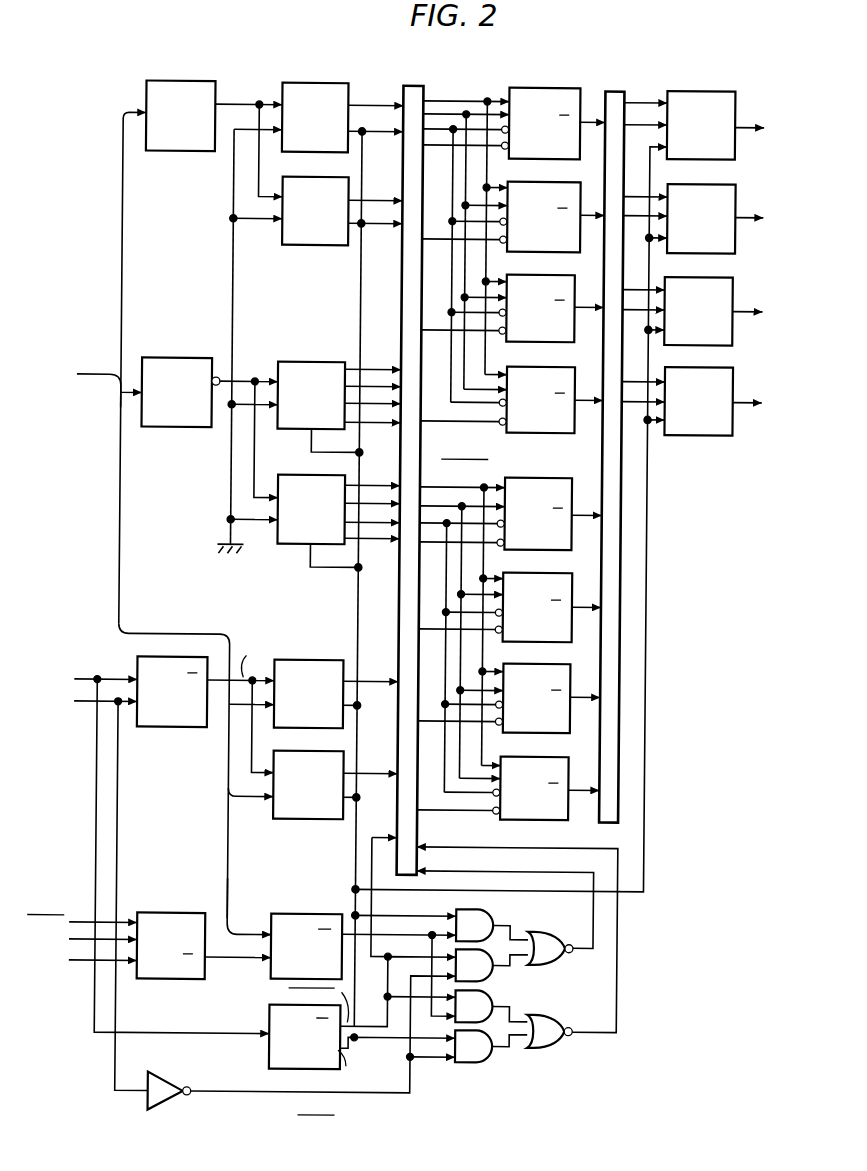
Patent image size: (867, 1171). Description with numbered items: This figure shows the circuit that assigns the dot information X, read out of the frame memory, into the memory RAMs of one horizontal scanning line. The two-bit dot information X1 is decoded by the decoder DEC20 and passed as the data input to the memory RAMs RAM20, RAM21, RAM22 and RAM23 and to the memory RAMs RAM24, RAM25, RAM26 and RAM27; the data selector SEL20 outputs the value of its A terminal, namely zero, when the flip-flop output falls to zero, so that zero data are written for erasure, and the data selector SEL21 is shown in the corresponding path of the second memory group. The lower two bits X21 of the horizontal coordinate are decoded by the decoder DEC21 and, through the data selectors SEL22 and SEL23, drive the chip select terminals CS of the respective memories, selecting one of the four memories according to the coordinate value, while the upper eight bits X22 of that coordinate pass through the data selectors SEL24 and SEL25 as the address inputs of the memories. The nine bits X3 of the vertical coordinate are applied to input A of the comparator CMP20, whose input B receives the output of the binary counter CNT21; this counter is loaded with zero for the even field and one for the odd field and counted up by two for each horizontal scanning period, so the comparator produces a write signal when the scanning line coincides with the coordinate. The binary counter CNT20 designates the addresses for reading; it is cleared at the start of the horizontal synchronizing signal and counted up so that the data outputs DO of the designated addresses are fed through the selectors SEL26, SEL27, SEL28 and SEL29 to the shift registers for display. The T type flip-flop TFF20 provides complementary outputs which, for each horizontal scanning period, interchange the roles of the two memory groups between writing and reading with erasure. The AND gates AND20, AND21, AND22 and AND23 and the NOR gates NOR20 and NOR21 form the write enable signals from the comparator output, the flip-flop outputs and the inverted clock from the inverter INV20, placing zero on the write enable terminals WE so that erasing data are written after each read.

The decoder DEC20 is at (172, 153).
The decoder DEC21 is at (171, 430).
The data selector SEL20 is at (283, 153).
The data selector SEL21 is at (303, 247).
The data selector SEL22 is at (305, 363).
The data selector SEL23 is at (290, 547).
The data selector SEL24 is at (299, 661).
The data selector SEL25 is at (312, 821).
The data selector SEL26 is at (733, 106).
The data selector SEL27 is at (733, 200).
The data selector SEL28 is at (731, 294).
The data selector SEL29 is at (731, 385).
The random access memory RAM20 is at (572, 157).
The random access memory RAM21 is at (566, 251).
The random access memory RAM22 is at (566, 342).
The random access memory RAM23 is at (542, 433).
The random access memory RAM24 is at (570, 547).
The random access memory RAM25 is at (566, 641).
The random access memory RAM26 is at (561, 732).
The random access memory RAM27 is at (561, 824).
The binary counter CNT20 is at (167, 730).
The binary counter CNT21 is at (165, 983).
The comparator CMP20 is at (306, 899).
The T type flip-flop TFF20 is at (269, 1051).
The inverter INV20 is at (168, 1108).
The AND gate AND20 is at (496, 903).
The AND gate AND21 is at (494, 978).
The AND gate AND22 is at (497, 998).
The AND gate AND23 is at (475, 1065).
The NOR gate NOR20 is at (562, 964).
The NOR gate NOR21 is at (562, 1047).
The dot information X1 is at (119, 152).
The lower two bits of horizontal coordinate X21 is at (119, 403).
The upper eight bits of horizontal coordinate X22 is at (228, 737).
The vertical coordinate bits X3 is at (239, 929).